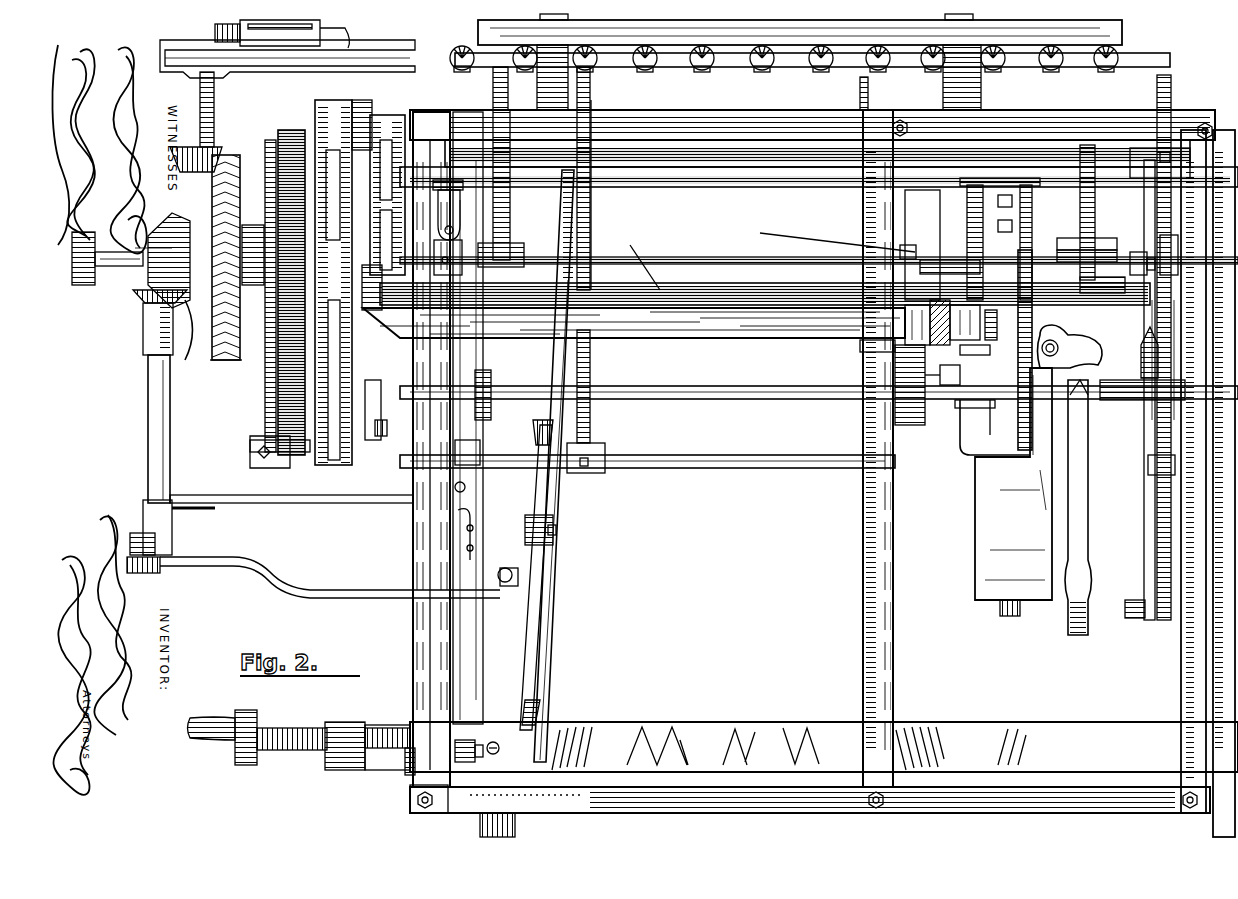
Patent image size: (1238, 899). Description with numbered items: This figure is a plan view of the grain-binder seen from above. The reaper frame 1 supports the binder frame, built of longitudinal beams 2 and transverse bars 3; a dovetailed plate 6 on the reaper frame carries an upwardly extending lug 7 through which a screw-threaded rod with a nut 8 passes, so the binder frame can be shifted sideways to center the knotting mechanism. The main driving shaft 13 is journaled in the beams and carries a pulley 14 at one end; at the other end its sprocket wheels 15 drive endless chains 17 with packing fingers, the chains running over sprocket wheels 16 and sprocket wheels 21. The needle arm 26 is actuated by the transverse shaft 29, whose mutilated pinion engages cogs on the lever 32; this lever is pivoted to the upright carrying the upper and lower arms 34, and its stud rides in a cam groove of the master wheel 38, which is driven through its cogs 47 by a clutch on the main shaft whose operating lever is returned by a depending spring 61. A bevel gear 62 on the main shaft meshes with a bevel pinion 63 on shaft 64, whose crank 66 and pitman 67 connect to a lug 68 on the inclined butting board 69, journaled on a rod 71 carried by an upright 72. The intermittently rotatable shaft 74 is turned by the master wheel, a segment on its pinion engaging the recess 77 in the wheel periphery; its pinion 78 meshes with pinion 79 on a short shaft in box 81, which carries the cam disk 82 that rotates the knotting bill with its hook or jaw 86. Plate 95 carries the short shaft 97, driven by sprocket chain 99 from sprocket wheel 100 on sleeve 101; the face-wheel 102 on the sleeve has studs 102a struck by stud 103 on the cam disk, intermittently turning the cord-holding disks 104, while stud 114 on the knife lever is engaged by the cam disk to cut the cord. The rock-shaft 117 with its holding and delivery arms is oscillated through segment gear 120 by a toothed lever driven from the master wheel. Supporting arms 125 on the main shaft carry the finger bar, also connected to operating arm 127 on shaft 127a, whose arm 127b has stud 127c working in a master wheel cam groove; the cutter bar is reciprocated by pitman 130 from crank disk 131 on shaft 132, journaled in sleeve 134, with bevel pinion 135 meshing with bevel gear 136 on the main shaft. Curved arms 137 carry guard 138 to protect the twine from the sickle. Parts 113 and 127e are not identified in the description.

The reaper frame 1 is at (1224, 483).
The longitudinal beams 2 is at (824, 782).
The transverse bars 3 is at (524, 266).
The dovetailed plate 6 is at (388, 770).
The lug 7 is at (277, 734).
The nut 8 is at (470, 735).
The main driving shaft 13 is at (148, 285).
The pulley 14 is at (76, 285).
The sprocket wheels 15 is at (1178, 252).
The sprocket wheels 16 is at (1064, 615).
The endless chains 17 is at (1156, 520).
The sprocket wheels 21 is at (1146, 463).
The needle arm 26 is at (1088, 588).
The transverse shaft 29 is at (683, 395).
The lever 32 is at (369, 271).
The upper and lower arms 34 is at (634, 323).
The master wheel 38 is at (322, 458).
The cogs 47 is at (278, 385).
The depending spring 61 is at (462, 207).
The bevel gear 62 is at (191, 335).
The bevel pinion 63 is at (146, 308).
The shaft 64 is at (150, 450).
The crank 66 is at (135, 540).
The pitman 67 is at (330, 595).
The lug 68 is at (498, 570).
The butting board 69 is at (550, 632).
The rod or bar 71 is at (535, 660).
The upright 72 is at (553, 525).
The intermittently rotatable horizontal shaft 74 is at (643, 256).
The curved notch or recess 77 is at (318, 112).
The pinion 78 is at (880, 312).
The pinion 79 is at (912, 395).
The box 81 is at (915, 325).
The cam wheel or disk 82 is at (1032, 304).
The hook or jaw 86 is at (1085, 362).
The plate 95 is at (1013, 484).
The short shaft 97 is at (1078, 212).
The sprocket chain 99 is at (928, 245).
The sprocket wheel 100 is at (950, 186).
The sleeve 101 is at (967, 240).
The face-wheel 102 is at (800, 272).
The studs 102a is at (830, 238).
The stud 103 is at (1082, 232).
The cord-holding disks 104 is at (1100, 248).
The bearing 113 is at (951, 302).
The stud 114 is at (970, 347).
The horizontal rock-shaft 117 is at (672, 190).
The segment gear 120 is at (387, 188).
The supporting arms 125 is at (512, 228).
The operating arm 127 is at (591, 358).
The horizontal shaft 127a is at (728, 492).
The arm 127b is at (265, 428).
The stud 127c is at (264, 250).
The block 127e is at (590, 470).
The pitman 130 is at (294, 24).
The crank disk or wheel 131 is at (214, 28).
The shaft 132 is at (170, 44).
The sleeve 134 is at (214, 128).
The bevel pinion 135 is at (222, 154).
The bevel gear 136 is at (240, 222).
The curved arms 137 is at (494, 80).
The guard 138 is at (800, 22).